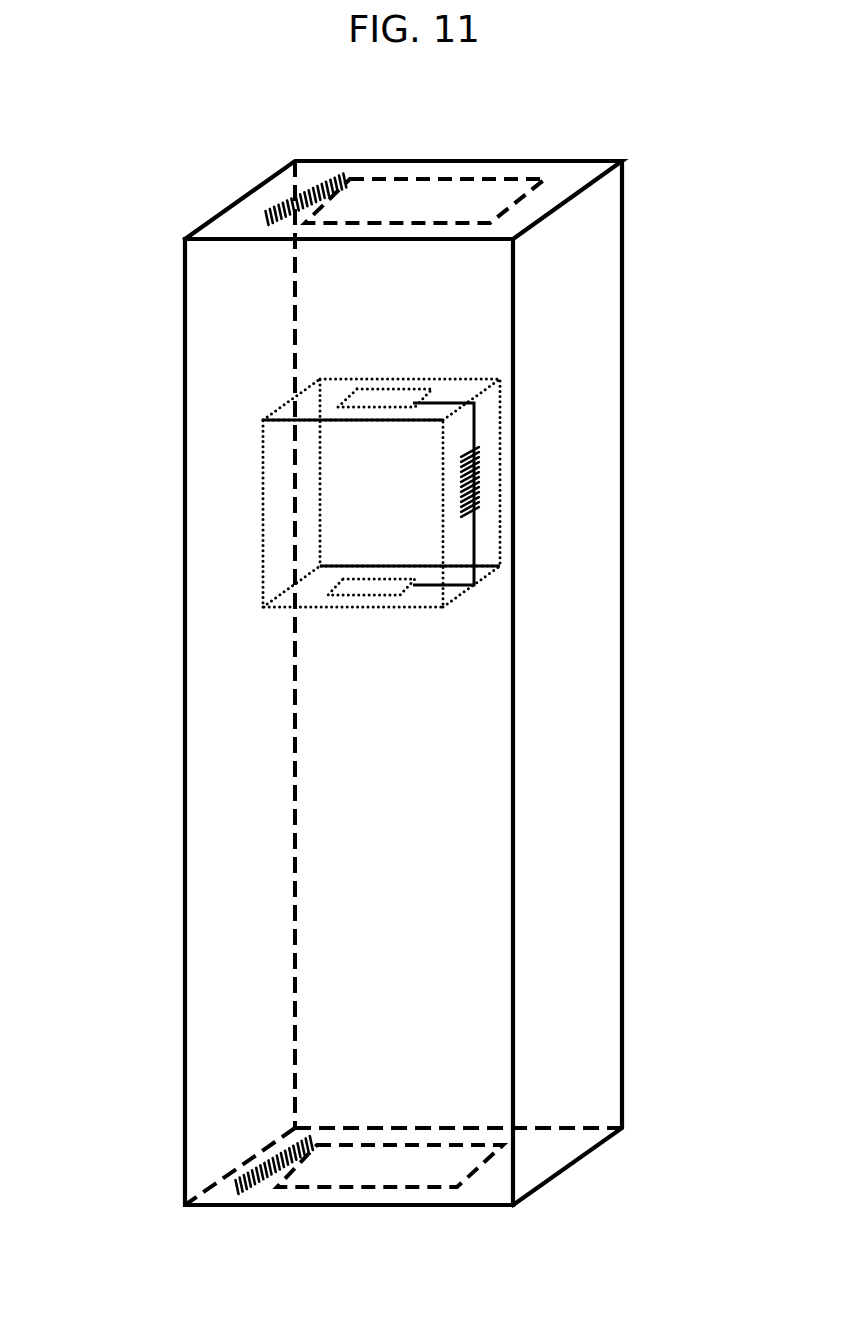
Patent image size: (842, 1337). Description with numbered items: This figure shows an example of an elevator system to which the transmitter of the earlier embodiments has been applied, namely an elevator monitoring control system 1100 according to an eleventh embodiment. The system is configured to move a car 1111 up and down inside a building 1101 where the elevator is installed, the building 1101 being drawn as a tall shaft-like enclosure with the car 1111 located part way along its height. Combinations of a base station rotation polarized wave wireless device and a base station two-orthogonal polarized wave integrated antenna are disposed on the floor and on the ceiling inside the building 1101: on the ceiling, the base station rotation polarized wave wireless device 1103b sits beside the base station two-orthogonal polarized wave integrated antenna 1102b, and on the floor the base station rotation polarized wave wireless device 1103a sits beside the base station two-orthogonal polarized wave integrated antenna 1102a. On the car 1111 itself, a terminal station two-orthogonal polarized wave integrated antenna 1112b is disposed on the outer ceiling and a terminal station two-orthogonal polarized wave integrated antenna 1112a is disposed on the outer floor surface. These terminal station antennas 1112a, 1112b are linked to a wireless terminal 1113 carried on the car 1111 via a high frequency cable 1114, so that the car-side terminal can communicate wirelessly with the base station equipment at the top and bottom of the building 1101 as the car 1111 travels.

The elevator monitoring control system 1100 is at (101, 132).
The building 1101 is at (624, 161).
The base station 2-orthogonal polarized wave integrated antenna 1102a is at (398, 1170).
The base station 2-orthogonal polarized wave integrated antenna 1102b is at (450, 178).
The base station rotation polarized wave wireless device 1103a is at (270, 1185).
The base station rotation polarized wave wireless device 1103b is at (310, 177).
The car 1111 is at (268, 417).
The terminal station 2-orthogonal polarized wave integrated antenna 1112a is at (372, 586).
The terminal station 2-orthogonal polarized wave integrated antenna 1112b is at (387, 402).
The wireless terminal 1113 is at (478, 487).
The high frequency cable 1114 is at (485, 428).